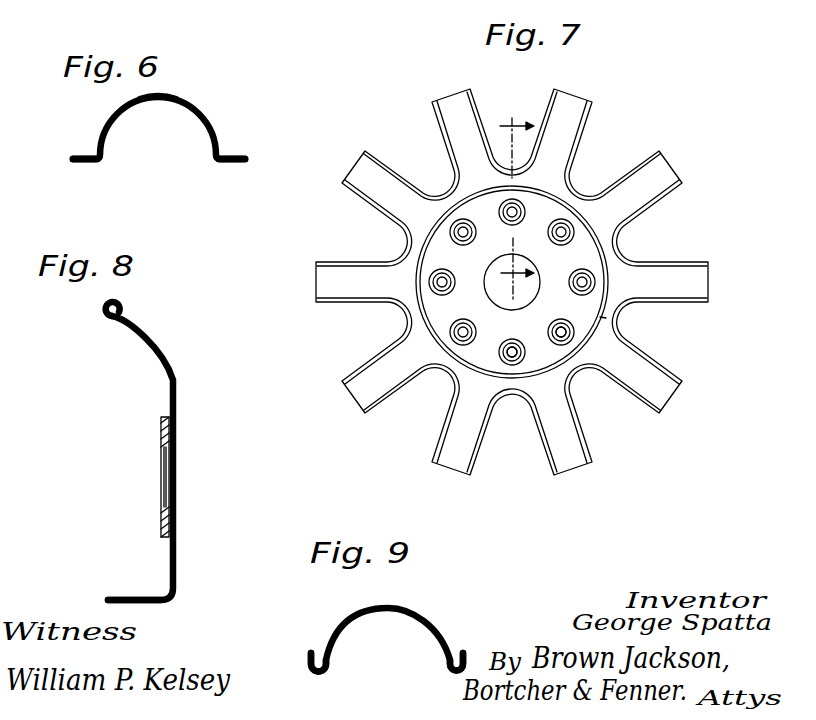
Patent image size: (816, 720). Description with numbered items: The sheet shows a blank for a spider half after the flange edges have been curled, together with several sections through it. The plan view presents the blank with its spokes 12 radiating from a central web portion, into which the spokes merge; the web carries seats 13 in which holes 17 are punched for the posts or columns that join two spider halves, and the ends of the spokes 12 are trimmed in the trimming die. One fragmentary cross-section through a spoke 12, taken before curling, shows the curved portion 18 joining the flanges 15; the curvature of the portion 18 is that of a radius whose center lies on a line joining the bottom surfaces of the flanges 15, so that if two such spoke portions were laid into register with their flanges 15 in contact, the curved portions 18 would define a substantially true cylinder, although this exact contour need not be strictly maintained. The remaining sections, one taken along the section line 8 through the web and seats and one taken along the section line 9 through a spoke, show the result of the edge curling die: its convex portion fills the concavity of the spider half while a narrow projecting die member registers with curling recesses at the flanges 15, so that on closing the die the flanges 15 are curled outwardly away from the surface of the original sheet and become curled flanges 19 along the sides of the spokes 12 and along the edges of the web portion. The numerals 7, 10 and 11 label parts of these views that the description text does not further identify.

In FIG. 8, the base flange 7 is at (127, 605).
In FIG. 7, the section line 8- 8 is at (517, 204).
In FIG. 7, the hub plate 9 is at (582, 250).
In FIG. 7, the hub rim 10 is at (605, 237).
In FIG. 7, the cylindrical wall 11 is at (603, 317).
In FIG. 8, the cylindrical wall 11 is at (173, 377).
In FIG. 6, the spoke 12 is at (195, 105).
In FIG. 7, the spoke 12 is at (567, 97).
In FIG. 7, the seat 13 is at (553, 331).
In FIG. 8, the seat 13 is at (167, 430).
In FIG. 6, the flange 15 is at (84, 151).
In FIG. 7, the hole 17 is at (521, 362).
In FIG. 8, the hole 17 is at (167, 465).
In FIG. 6, the curved portion 18 is at (150, 104).
In FIG. 9, the curved portion 18 is at (381, 612).
In FIG. 7, the curled flange 19 is at (630, 167).
In FIG. 8, the curled flange 19 is at (124, 309).
In FIG. 9, the curled flange 19 is at (306, 657).